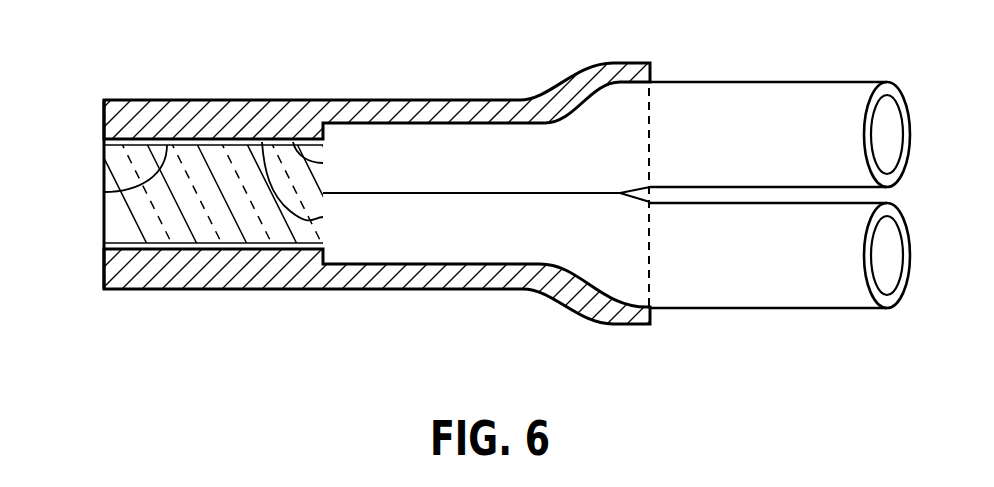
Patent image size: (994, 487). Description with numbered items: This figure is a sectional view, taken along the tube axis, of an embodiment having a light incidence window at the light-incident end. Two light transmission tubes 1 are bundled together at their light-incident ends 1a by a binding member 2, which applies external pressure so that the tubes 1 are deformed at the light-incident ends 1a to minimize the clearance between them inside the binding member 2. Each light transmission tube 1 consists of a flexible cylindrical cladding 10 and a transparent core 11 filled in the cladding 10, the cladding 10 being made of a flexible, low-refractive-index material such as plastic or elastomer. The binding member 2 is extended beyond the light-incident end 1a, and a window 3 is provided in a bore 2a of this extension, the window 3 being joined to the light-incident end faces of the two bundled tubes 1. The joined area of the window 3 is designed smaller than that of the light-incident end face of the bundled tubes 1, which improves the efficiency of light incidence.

The light transmission tube 1 is at (802, 200).
The light-incident end 1a is at (293, 142).
The binding member 2 is at (510, 110).
The bore 2a is at (103, 187).
The window 3 is at (120, 220).
The cladding 10 is at (878, 88).
The core 11 is at (890, 133).